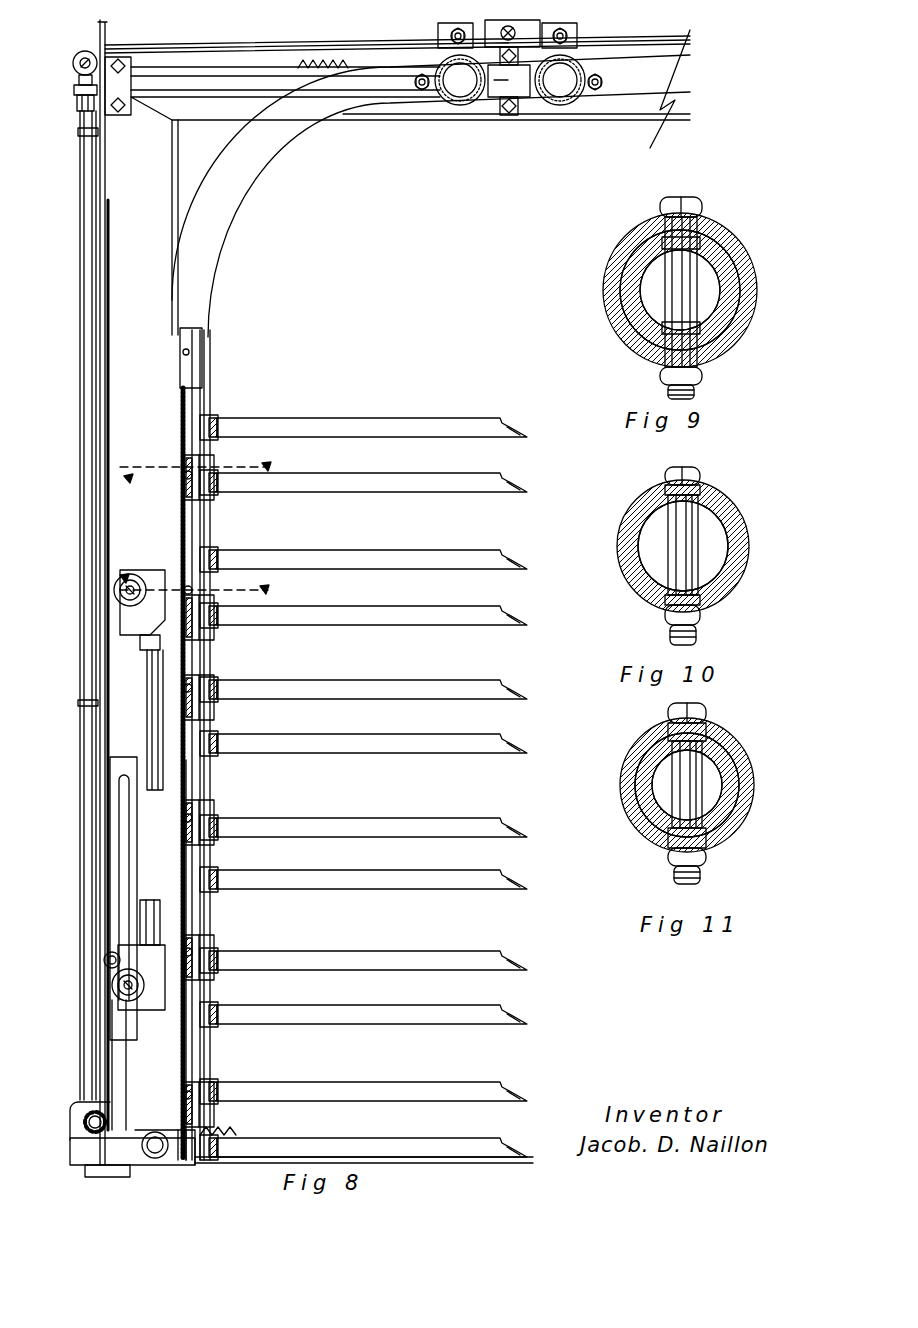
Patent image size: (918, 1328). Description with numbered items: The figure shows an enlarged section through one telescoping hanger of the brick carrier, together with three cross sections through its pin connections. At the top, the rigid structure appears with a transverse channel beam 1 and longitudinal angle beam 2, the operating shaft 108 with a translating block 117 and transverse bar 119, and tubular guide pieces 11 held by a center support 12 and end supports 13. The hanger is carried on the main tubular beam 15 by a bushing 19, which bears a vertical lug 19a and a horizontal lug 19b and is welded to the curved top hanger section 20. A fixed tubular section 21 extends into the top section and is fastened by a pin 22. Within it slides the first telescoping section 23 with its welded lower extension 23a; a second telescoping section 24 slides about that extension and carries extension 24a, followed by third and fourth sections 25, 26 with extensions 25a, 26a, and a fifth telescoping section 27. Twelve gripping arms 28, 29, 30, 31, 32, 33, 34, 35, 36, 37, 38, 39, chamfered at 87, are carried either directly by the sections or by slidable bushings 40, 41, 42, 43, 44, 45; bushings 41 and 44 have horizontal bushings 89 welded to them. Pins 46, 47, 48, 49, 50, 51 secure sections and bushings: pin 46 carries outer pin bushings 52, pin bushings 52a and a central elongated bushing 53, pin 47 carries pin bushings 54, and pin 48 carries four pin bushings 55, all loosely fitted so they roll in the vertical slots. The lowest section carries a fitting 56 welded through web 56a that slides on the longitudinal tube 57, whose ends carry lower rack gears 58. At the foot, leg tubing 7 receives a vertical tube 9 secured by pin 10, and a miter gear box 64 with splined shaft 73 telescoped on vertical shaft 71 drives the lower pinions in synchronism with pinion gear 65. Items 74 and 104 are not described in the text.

In FIG. 8, the transverse channel beam 1 is at (640, 130).
In FIG. 8, the longitudinal angle beam 2 is at (106, 32).
In FIG. 8, the seamless tubing section 7 is at (121, 757).
In FIG. 8, the vertical tube 9 is at (128, 1092).
In FIG. 8, the pin 10 is at (197, 593).
In FIG. 8, the tubular guide piece 11 is at (213, 98).
In FIG. 8, the center support 12 is at (509, 115).
In FIG. 8, the end support 13 is at (118, 115).
In FIG. 8, the main tubular beam 15 is at (565, 75).
In FIG. 8, the bushing 19 is at (460, 105).
In FIG. 8, the vertical lug 19a is at (347, 64).
In FIG. 8, the horizontally extending lug 19b is at (414, 84).
In FIG. 8, the curved top hanger section 20 is at (250, 212).
In FIG. 8, the fixed tubular section 21 is at (202, 405).
In FIG. 9, the fixed tubular section 21 is at (615, 340).
In FIG. 8, the pin 22 is at (190, 352).
In FIG. 8, the first telescoping section 23 is at (207, 535).
In FIG. 9, the first telescoping section 23 is at (635, 280).
In FIG. 10, the first telescoping section 23 is at (730, 535).
In FIG. 8, the lower extension 23a is at (207, 665).
In FIG. 11, the lower extension 23a is at (720, 757).
In FIG. 8, the second telescoping section 24 is at (212, 775).
In FIG. 11, the second telescoping section 24 is at (730, 790).
In FIG. 8, the welded extension 24a is at (212, 795).
In FIG. 8, the third telescoping section 25 is at (210, 865).
In FIG. 8, the welded extension 25a is at (210, 925).
In FIG. 8, the fourth telescoping section 26 is at (210, 995).
In FIG. 8, the welded extension 26a is at (210, 1060).
In FIG. 8, the fifth telescoping section 27 is at (212, 1125).
In FIG. 8, the gripping arm 28 is at (527, 430).
In FIG. 8, the gripping arm 29 is at (527, 485).
In FIG. 8, the gripping arm 30 is at (527, 562).
In FIG. 8, the gripping arm 31 is at (527, 618).
In FIG. 8, the gripping arm 32 is at (527, 692).
In FIG. 8, the gripping arm 33 is at (527, 746).
In FIG. 8, the gripping arm 34 is at (527, 830).
In FIG. 8, the gripping arm 35 is at (527, 882).
In FIG. 8, the gripping arm 36 is at (527, 963).
In FIG. 8, the gripping arm 37 is at (527, 1017).
In FIG. 8, the gripping arm 38 is at (527, 1094).
In FIG. 8, the gripping arm 39 is at (527, 1150).
In FIG. 8, the bushing 40 is at (214, 460).
In FIG. 9, the bushing 40 is at (745, 300).
In FIG. 8, the bushing 41 is at (214, 640).
In FIG. 10, the bushing 41 is at (735, 510).
In FIG. 8, the bushing 42 is at (214, 718).
In FIG. 11, the bushing 42 is at (750, 808).
In FIG. 8, the bushing 43 is at (214, 812).
In FIG. 8, the bushing 44 is at (214, 945).
In FIG. 8, the bushing 45 is at (214, 1082).
In FIG. 8, the pin 46 is at (185, 470).
In FIG. 9, the pin 46 is at (668, 390).
In FIG. 8, the pin 47 is at (196, 590).
In FIG. 10, the pin 47 is at (696, 633).
In FIG. 8, the pin 48 is at (185, 686).
In FIG. 11, the pin 48 is at (700, 874).
In FIG. 8, the pin 49 is at (186, 818).
In FIG. 8, the pin 50 is at (187, 950).
In FIG. 8, the pin 51 is at (182, 1085).
In FIG. 9, the outer pin bushing 52 is at (700, 210).
In FIG. 9, the pin bushing 52a is at (695, 242).
In FIG. 9, the central elongated pin bushing 53 is at (660, 300).
In FIG. 10, the pin bushing 54 is at (700, 488).
In FIG. 11, the pin bushing 55 is at (706, 725).
In FIG. 8, the fitting 56 is at (155, 1158).
In FIG. 8, the web 56a is at (182, 1160).
In FIG. 8, the longitudinal tube 57 is at (145, 1134).
In FIG. 8, the lower rack gear 58 is at (70, 1150).
In FIG. 8, the miter gear box 64 is at (70, 1105).
In FIG. 8, the pinion gear 65 is at (73, 55).
In FIG. 8, the vertical shaft 71 is at (80, 577).
In FIG. 8, the splined shaft 73 is at (95, 950).
In FIG. 8, the nut 74 is at (77, 87).
In FIG. 8, the chamfer 87 is at (497, 1092).
In FIG. 8, the horizontal longitudinal bushing 89 is at (128, 612).
In FIG. 8, the rod 104 is at (150, 722).
In FIG. 8, the operating shaft 108 is at (513, 30).
In FIG. 8, the translating block 117 is at (485, 24).
In FIG. 8, the transverse bar 119 is at (225, 44).